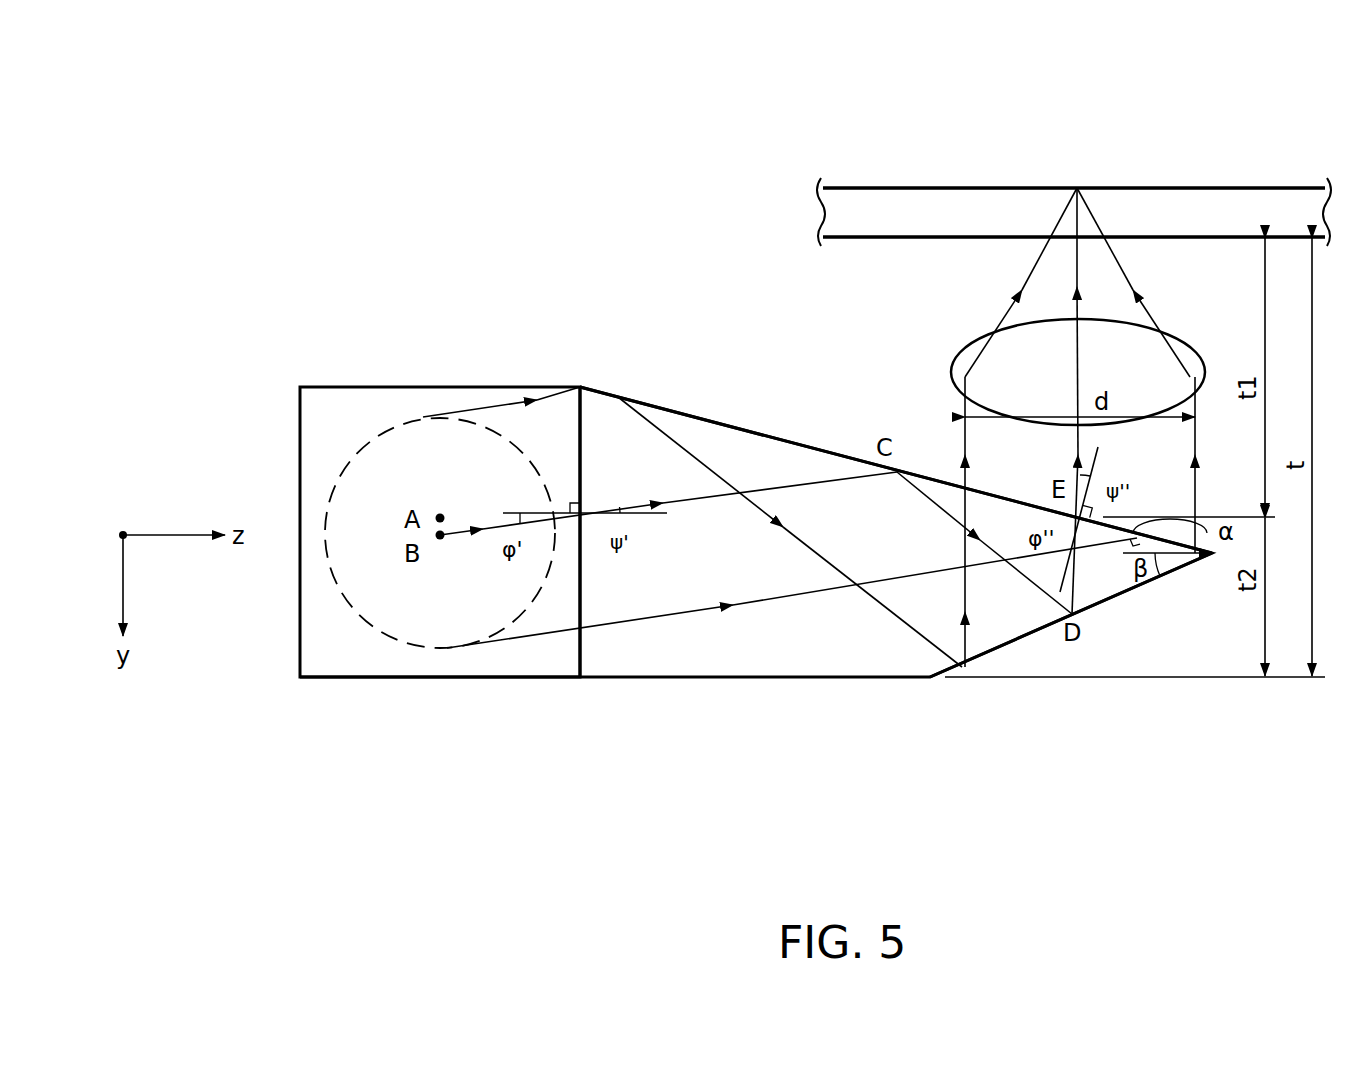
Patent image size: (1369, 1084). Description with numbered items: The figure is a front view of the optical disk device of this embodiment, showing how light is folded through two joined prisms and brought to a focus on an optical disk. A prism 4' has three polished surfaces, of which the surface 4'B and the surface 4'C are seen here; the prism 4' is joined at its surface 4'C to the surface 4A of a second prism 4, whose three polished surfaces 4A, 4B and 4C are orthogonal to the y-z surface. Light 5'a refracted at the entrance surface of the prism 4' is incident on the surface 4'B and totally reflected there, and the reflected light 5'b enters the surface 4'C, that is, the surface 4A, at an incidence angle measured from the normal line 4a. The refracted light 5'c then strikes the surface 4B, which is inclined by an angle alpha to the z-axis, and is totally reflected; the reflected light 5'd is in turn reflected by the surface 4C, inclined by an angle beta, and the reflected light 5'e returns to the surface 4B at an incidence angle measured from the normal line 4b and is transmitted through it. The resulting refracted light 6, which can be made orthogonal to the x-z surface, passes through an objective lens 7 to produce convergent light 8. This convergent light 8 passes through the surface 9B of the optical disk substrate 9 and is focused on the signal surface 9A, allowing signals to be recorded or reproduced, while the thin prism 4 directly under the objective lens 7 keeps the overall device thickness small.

The prism 4' is at (440, 481).
The surface 4'B is at (436, 733).
The surface 4'C is at (620, 567).
The prism 4 is at (896, 501).
The surface 4A is at (578, 655).
The surface 4B is at (806, 444).
The surface 4C is at (1097, 604).
The normal line 4a is at (664, 516).
The normal line 4b is at (1100, 452).
The refracted light 5'a is at (501, 455).
The reflected light 5'b is at (667, 542).
The refracted light 5'c is at (790, 532).
The reflected light 5'd is at (957, 543).
The reflected light 5'e is at (793, 593).
The light 6 is at (1072, 460).
The objective lens 7 is at (1195, 352).
The convergent light 8 is at (1074, 263).
The optical disk substrate 9 is at (1216, 185).
The signal surface 9A is at (1176, 187).
The surface 9B is at (1207, 239).